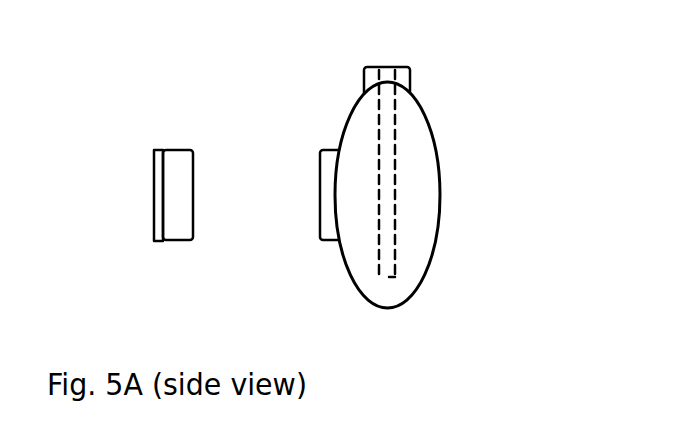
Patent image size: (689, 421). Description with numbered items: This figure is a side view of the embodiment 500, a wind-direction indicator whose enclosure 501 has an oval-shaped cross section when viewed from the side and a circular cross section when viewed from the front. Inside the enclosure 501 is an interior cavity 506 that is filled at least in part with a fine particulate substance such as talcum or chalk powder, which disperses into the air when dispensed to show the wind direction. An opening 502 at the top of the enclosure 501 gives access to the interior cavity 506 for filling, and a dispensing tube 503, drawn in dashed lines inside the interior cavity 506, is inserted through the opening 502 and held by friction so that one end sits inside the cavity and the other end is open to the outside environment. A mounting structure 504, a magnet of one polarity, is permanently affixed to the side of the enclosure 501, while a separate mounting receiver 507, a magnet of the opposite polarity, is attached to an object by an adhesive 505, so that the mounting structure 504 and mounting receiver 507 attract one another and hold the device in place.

The embodiment 500 is at (519, 281).
The enclosure 501 is at (443, 197).
The opening 502 is at (363, 78).
The dispensing tube 503 is at (395, 173).
The mounting structure 504 is at (318, 198).
The adhesive 505 is at (153, 196).
The interior cavity 506 is at (415, 133).
The mounting receiver 507 is at (196, 196).